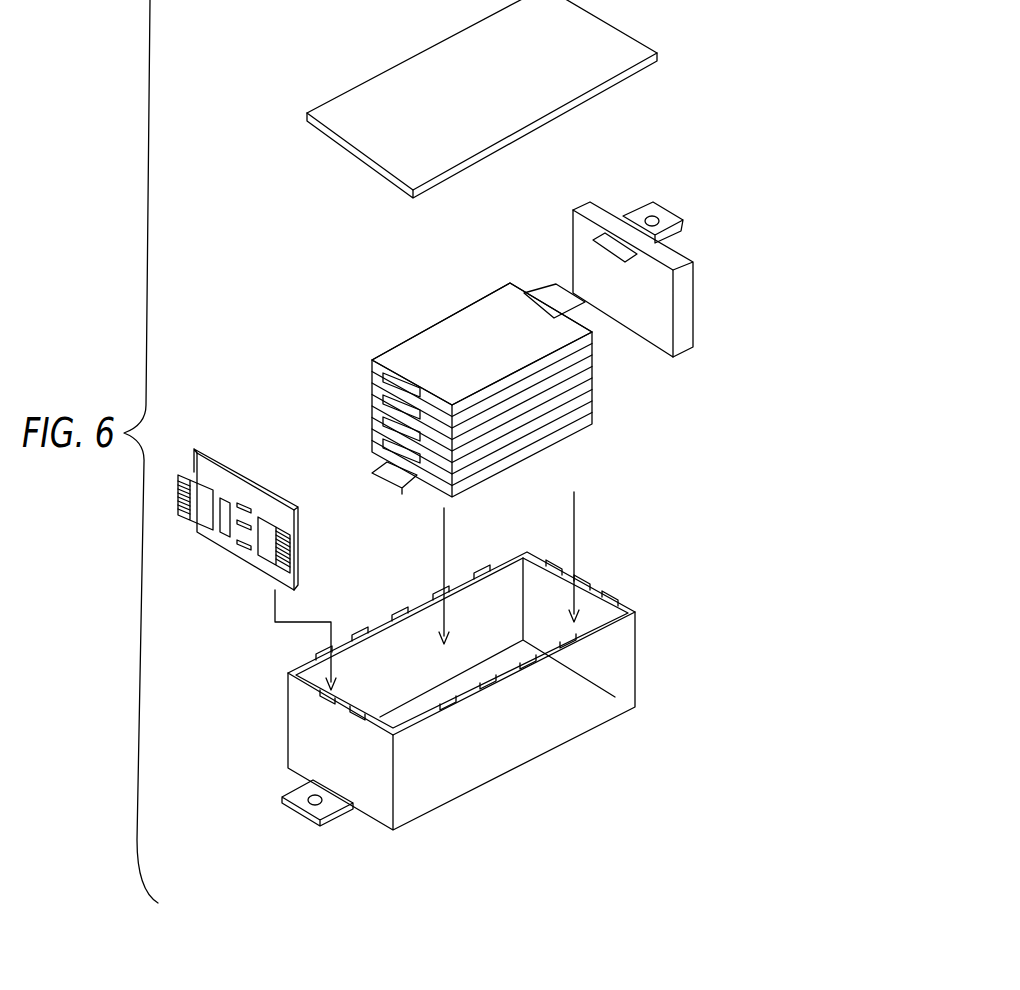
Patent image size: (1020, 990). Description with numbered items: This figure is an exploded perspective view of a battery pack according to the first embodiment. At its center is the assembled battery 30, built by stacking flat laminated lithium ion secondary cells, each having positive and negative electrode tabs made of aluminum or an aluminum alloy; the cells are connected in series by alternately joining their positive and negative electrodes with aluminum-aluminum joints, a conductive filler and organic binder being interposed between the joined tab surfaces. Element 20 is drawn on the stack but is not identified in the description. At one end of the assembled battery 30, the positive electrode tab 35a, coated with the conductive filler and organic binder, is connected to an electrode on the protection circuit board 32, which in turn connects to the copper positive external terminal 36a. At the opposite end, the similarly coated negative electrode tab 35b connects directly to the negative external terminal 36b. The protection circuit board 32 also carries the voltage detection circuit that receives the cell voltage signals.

The battery cell 20 is at (493, 320).
The assembled battery 30 is at (512, 277).
The protection circuit board 32 is at (227, 547).
The positive electrode tab 35a is at (389, 473).
The negative electrode tab 35b is at (563, 297).
The positive external terminal 36a is at (302, 800).
The negative external terminal 36b is at (668, 222).